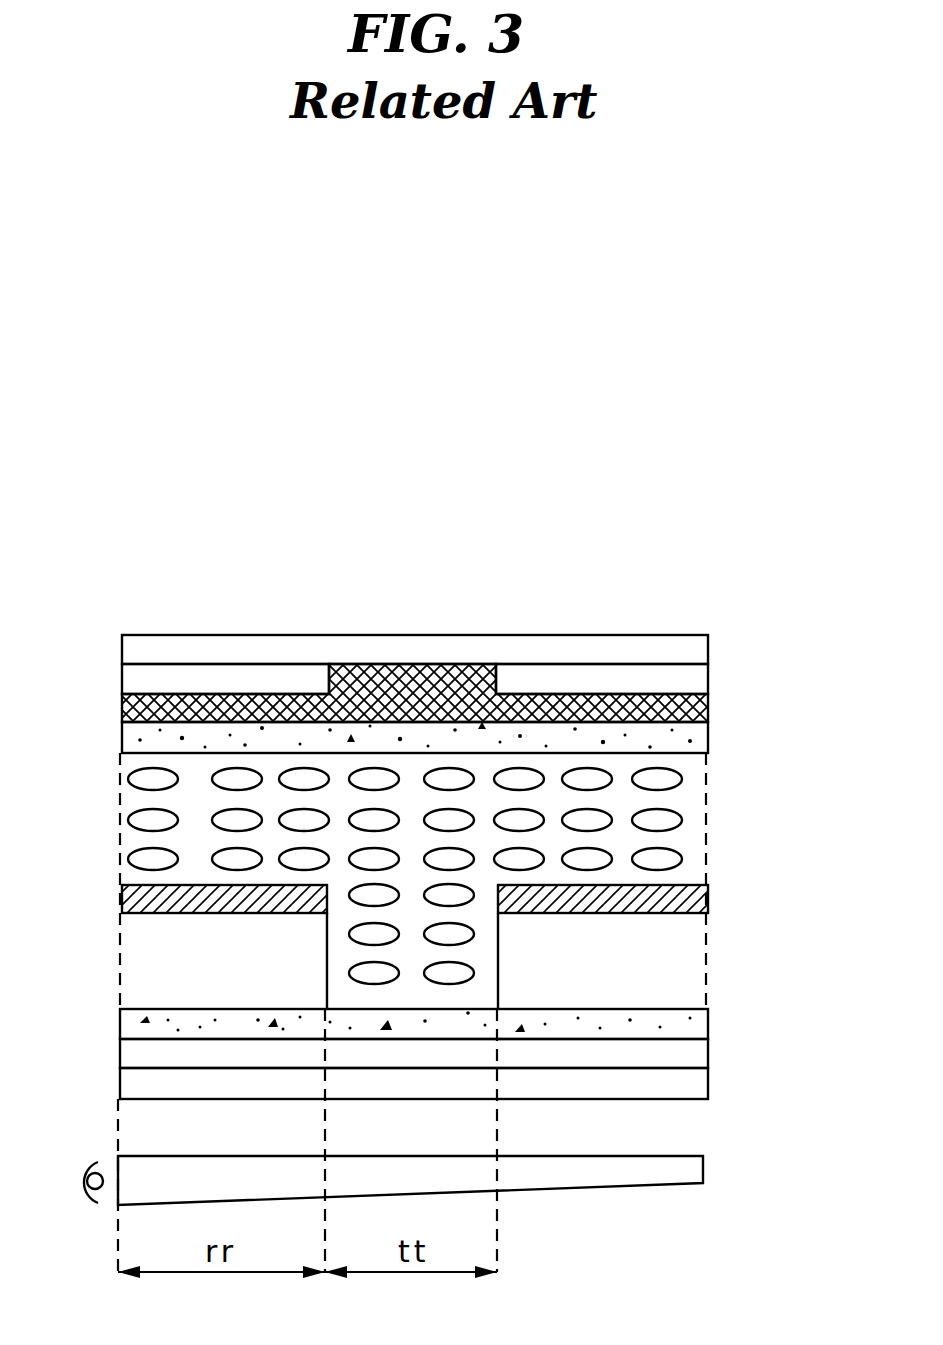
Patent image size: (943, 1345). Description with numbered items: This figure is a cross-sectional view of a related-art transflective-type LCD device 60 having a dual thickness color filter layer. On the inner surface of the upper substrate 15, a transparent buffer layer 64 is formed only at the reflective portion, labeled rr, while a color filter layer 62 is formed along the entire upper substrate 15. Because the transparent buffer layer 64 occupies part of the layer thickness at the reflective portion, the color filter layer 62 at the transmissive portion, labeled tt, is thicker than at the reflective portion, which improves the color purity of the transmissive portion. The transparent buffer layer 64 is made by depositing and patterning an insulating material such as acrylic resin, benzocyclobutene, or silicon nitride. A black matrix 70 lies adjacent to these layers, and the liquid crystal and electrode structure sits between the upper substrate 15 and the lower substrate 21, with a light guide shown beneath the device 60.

The liquid crystal display device 60 is at (650, 598).
The upper substrate 15 is at (704, 648).
The transparent buffer layer 64 is at (135, 673).
The color filter layer 62 is at (704, 720).
The black matrix 70 is at (704, 754).
The lower substrate 21 is at (702, 1086).